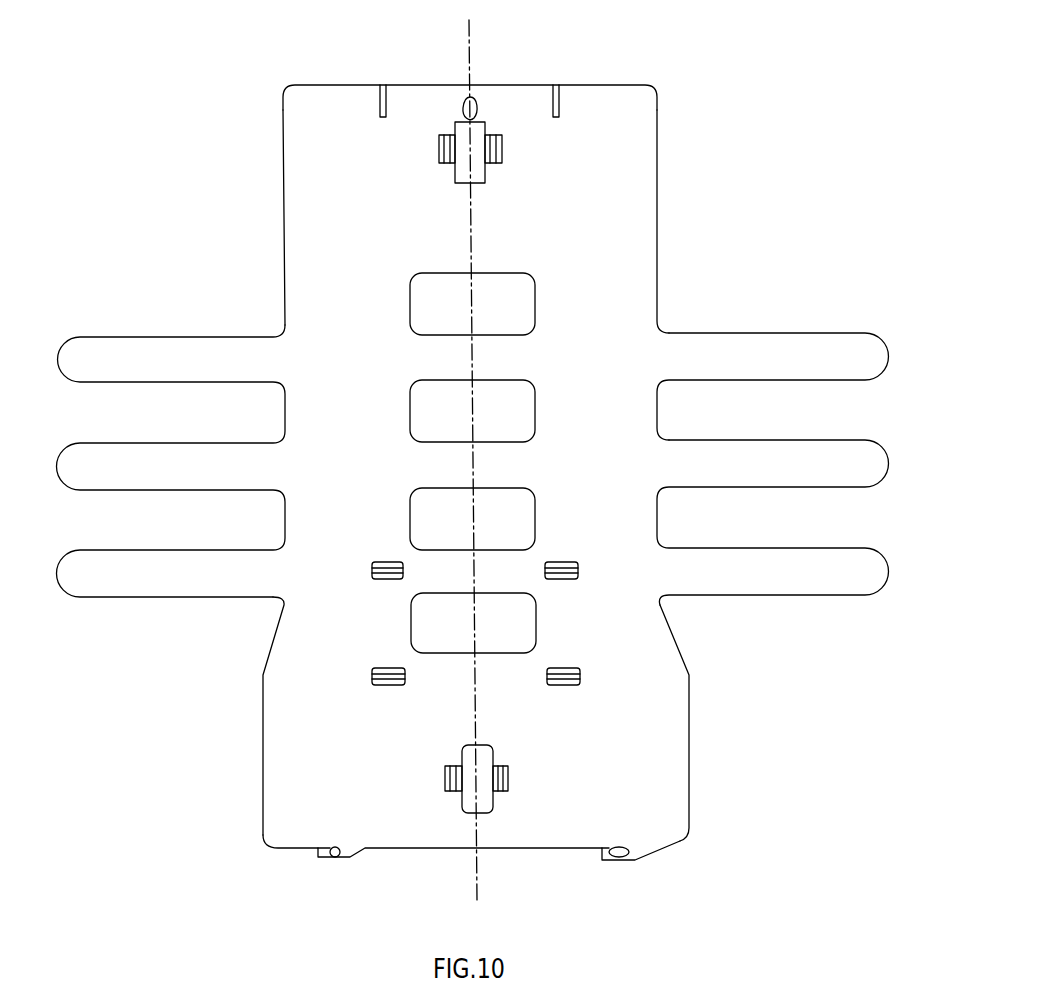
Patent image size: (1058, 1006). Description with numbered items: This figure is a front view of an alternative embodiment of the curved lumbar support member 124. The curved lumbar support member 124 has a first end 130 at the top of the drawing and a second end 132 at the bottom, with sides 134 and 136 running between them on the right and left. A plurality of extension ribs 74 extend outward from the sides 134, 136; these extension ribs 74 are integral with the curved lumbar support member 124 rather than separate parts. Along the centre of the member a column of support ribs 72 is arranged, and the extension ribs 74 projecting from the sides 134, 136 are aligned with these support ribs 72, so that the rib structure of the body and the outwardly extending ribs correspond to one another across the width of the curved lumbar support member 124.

The curved lumbar support member 124 is at (675, 205).
The first end 130 is at (500, 88).
The side 136 is at (283, 255).
The extension ribs 74 is at (707, 360).
The side 134 is at (662, 533).
The support rib 72 is at (452, 357).
The second end 132 is at (545, 852).